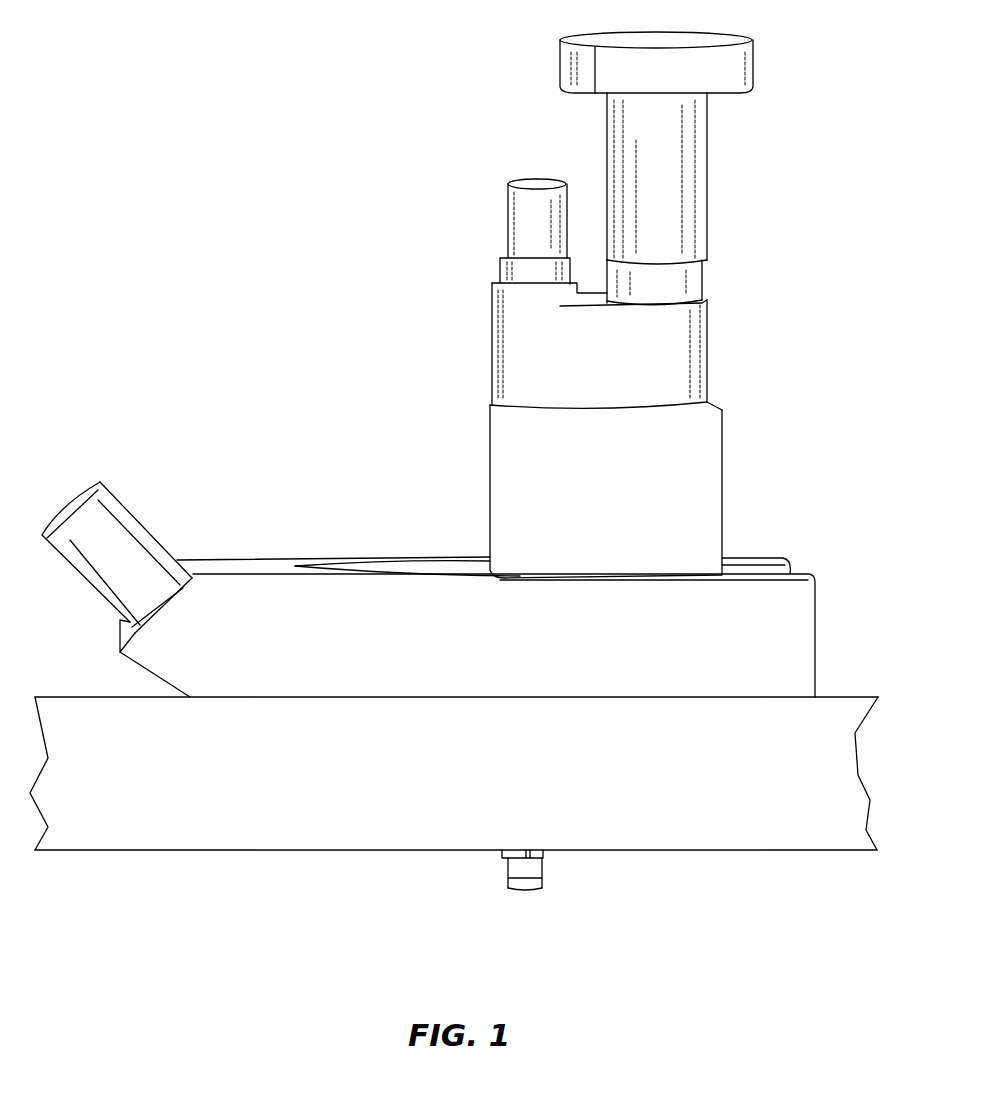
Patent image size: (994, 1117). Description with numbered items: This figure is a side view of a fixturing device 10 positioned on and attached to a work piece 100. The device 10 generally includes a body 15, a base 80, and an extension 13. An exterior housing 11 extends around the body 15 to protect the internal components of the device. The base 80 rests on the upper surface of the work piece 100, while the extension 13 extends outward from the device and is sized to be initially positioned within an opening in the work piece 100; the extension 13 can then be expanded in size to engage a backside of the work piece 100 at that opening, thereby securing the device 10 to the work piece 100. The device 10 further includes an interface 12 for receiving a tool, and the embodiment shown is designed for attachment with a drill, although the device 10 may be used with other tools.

The fixturing device 10 is at (283, 213).
The exterior housing 11 is at (707, 335).
The interface 12 is at (327, 557).
The extension 13 is at (500, 875).
The body 15 is at (712, 369).
The base 80 is at (822, 605).
The work piece 100 is at (642, 823).